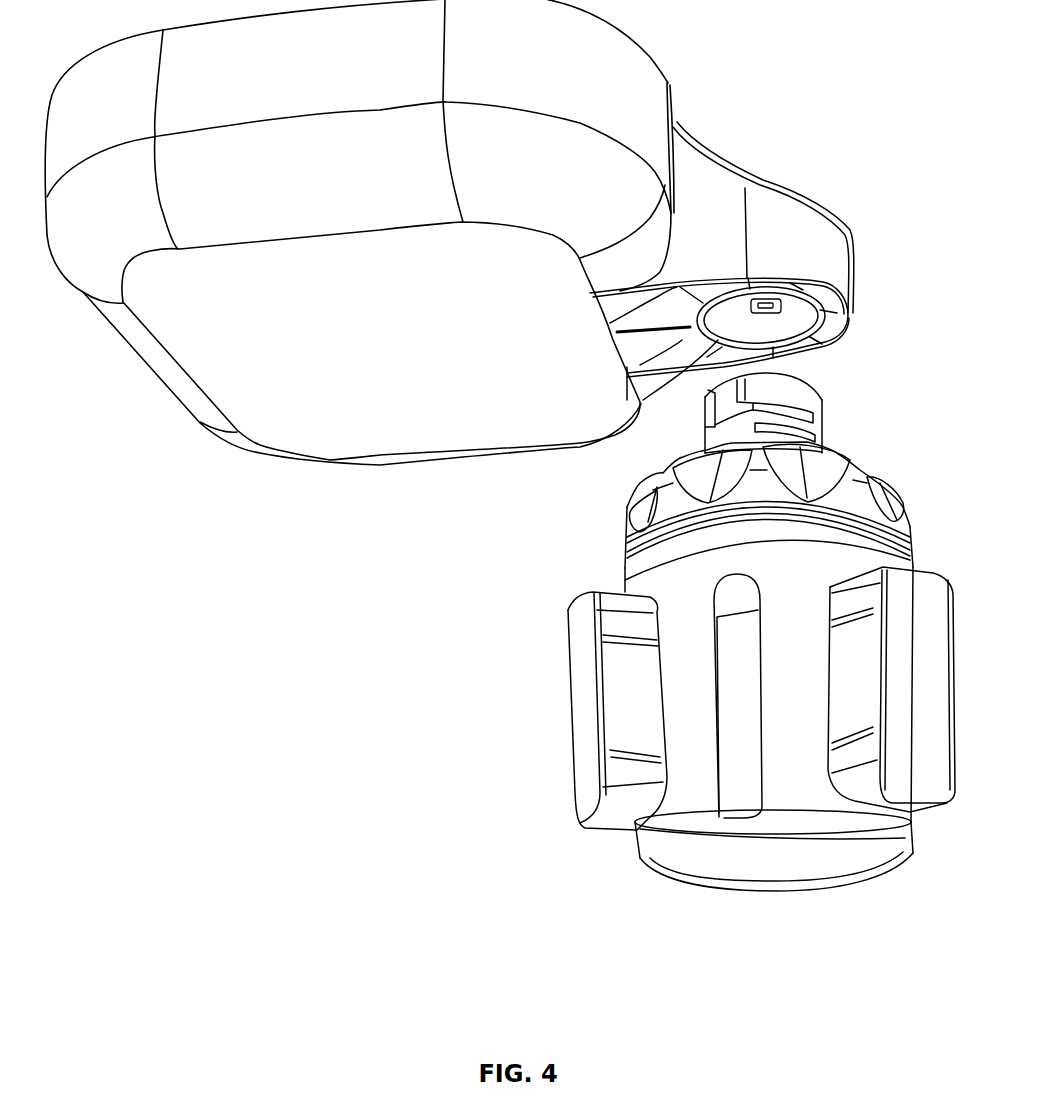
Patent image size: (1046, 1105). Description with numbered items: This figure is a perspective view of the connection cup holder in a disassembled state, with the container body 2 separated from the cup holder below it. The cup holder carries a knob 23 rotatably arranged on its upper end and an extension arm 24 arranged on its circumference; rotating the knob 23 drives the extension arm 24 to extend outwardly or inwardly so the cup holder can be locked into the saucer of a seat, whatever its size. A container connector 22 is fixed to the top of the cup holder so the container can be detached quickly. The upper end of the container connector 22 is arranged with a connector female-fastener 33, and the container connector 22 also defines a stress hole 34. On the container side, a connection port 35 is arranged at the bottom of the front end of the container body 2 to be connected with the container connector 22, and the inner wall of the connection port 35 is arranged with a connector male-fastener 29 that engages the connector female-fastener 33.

The container body 2 is at (345, 350).
The container connector 22 is at (793, 405).
The knob 23 is at (640, 507).
The extension arm 24 is at (623, 673).
The connector male-fastener 29 is at (770, 299).
The connector female-fastener 33 is at (777, 410).
The stress hole 34 is at (803, 428).
The connection port 35 is at (800, 320).